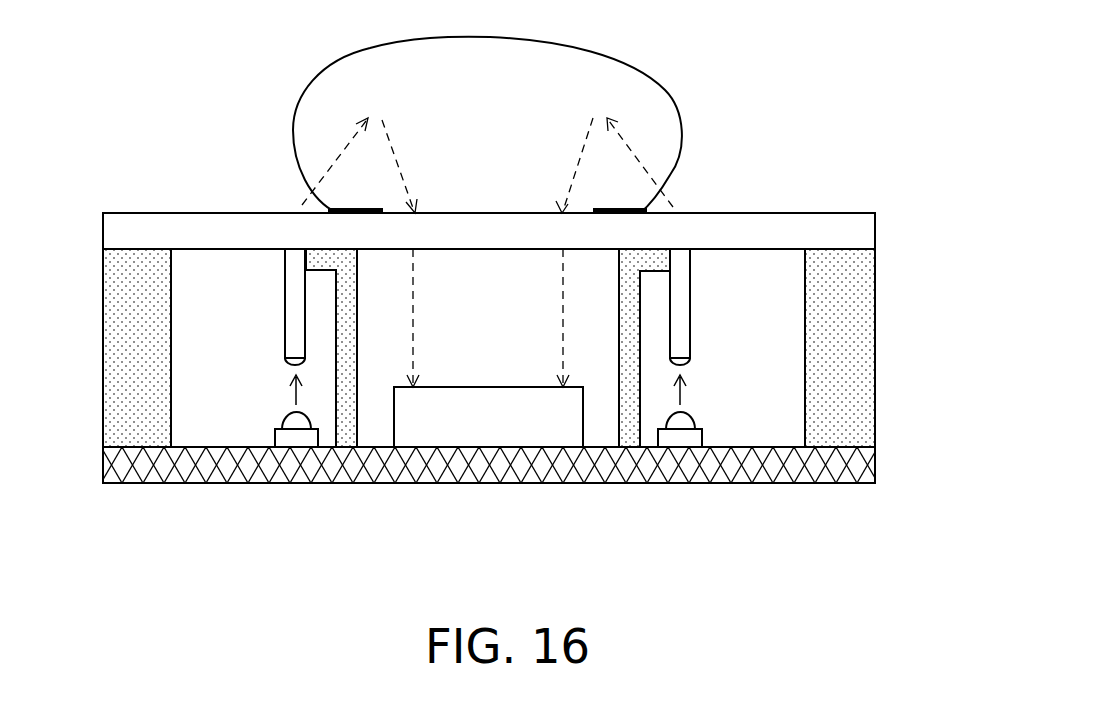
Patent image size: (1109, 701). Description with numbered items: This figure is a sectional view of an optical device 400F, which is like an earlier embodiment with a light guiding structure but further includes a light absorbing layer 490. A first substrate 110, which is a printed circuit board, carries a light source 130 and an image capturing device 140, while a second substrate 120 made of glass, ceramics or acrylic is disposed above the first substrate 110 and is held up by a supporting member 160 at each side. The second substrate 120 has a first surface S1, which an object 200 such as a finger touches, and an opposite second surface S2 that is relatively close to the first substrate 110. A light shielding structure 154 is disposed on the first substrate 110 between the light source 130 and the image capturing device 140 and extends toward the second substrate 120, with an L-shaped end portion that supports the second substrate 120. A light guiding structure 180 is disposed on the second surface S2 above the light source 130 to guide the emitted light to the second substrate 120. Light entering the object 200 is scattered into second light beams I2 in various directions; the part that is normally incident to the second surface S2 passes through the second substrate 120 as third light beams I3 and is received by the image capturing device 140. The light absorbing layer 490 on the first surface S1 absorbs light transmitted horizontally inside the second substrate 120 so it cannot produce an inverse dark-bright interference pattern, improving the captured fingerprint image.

The optical device 400F is at (170, 117).
The first substrate 110 is at (860, 467).
The second substrate 120 is at (858, 231).
The light source 130 is at (297, 442).
The image capturing device 140 is at (477, 427).
The light shielding structure 154 is at (632, 442).
The supporting member 160 is at (145, 427).
The light guiding structure 180 is at (682, 327).
The object 200 is at (682, 128).
The light absorbing layer 490 is at (622, 211).
The first surface S1 is at (208, 200).
The second surface S2 is at (207, 252).
The second light beam I2 is at (583, 148).
The third light beam I3 is at (488, 318).